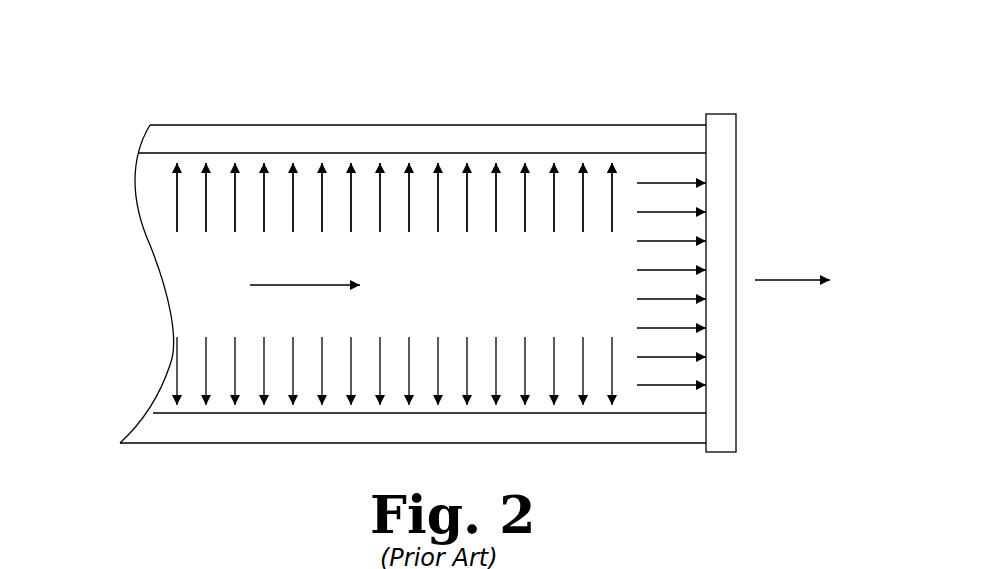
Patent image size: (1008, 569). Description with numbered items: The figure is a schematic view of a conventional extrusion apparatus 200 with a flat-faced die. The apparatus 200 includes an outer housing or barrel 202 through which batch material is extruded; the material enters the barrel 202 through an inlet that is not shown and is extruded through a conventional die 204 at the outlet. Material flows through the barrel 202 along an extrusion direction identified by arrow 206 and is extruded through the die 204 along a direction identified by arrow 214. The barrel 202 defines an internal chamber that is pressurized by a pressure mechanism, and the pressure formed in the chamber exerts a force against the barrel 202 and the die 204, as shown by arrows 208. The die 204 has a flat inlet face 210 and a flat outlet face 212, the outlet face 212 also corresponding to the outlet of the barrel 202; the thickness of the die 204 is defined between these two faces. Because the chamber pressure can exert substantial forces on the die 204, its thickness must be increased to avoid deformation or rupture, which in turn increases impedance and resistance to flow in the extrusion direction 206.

The extrusion apparatus 200 is at (144, 104).
The barrel 202 is at (392, 124).
The die 204 is at (725, 150).
The arrow identifying extrusion direction 206 is at (278, 283).
The arrows showing pressure force 208 is at (177, 192).
The flat inlet face 210 is at (696, 165).
The flat outlet face 212 is at (745, 410).
The arrow identifying extrusion direction through die 214 is at (785, 280).